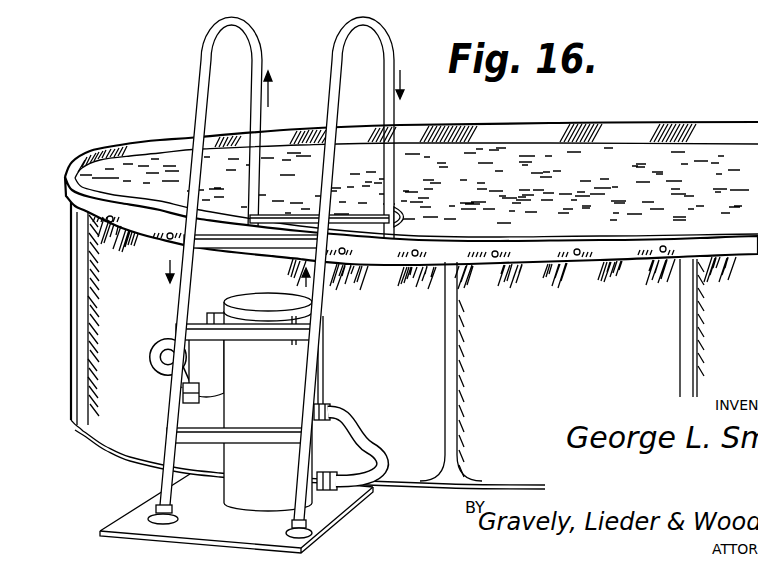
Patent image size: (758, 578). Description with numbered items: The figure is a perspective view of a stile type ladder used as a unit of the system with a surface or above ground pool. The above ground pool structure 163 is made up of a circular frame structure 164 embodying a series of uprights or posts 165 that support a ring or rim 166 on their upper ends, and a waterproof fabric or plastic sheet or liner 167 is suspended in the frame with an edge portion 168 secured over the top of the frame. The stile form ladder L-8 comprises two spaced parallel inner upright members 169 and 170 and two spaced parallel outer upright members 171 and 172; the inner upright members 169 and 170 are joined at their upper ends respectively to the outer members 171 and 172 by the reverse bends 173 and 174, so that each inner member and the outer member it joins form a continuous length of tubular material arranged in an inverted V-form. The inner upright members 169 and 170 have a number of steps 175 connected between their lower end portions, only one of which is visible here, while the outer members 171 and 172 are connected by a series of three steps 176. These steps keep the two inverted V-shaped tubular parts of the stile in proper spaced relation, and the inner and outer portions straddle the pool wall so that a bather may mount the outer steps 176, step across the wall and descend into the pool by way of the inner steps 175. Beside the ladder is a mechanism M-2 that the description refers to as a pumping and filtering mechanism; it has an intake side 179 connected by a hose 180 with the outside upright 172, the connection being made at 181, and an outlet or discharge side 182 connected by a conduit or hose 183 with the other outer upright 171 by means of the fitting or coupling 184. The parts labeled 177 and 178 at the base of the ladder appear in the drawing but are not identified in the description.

The above ground pool structure 163 is at (122, 138).
The circular frame structure 164 is at (122, 461).
The uprights or posts 165 is at (459, 372).
The ring or rim 166 is at (683, 125).
The waterproof fabric or plastic sheet or liner 167 is at (88, 306).
The edge portion 168 is at (540, 261).
The inner upright member 169 is at (396, 173).
The inner upright member 170 is at (261, 178).
The outer upright member 171 is at (322, 314).
The outer upright member 172 is at (178, 302).
The reverse bend 173 is at (391, 30).
The reverse bend 174 is at (207, 36).
The inner steps 175 is at (394, 217).
The outer steps 176 is at (245, 341).
The base plate 177 is at (314, 524).
The base plate edge 178 is at (120, 522).
The intake side 179 is at (215, 312).
The hose 180 is at (149, 357).
The connection 181 is at (184, 398).
The outlet or discharge side 182 is at (342, 494).
The conduit or hose 183 is at (349, 429).
The fitting or coupling 184 is at (328, 406).
The pump motor M-2 is at (325, 379).
The stile form ladder L-8 is at (344, 22).